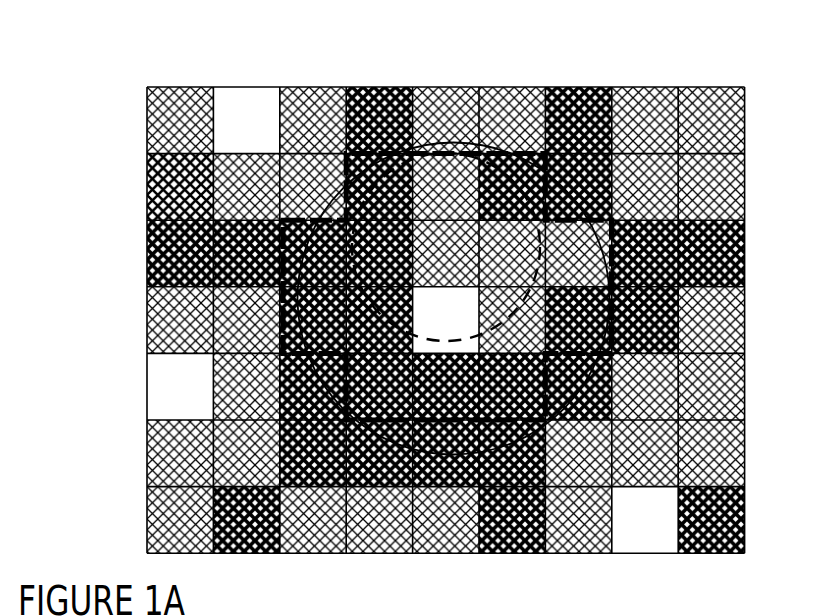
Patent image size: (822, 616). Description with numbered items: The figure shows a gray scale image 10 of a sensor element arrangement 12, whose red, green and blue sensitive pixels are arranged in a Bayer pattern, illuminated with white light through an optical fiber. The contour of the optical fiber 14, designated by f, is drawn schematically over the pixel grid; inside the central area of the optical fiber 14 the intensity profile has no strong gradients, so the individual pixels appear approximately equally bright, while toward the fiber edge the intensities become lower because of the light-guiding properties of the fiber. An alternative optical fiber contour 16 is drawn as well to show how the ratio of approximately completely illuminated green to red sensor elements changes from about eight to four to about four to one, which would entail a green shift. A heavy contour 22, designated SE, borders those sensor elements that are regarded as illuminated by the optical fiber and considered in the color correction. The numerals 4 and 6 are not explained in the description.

The gray scale image 10 is at (313, 79).
The optical fiber 14 is at (607, 321).
The alternative optical fiber contour 16 is at (546, 238).
The contour 22 is at (283, 323).
The reference numeral 4 is at (327, 609).
The reference numeral 6 is at (227, 609).
The sensor element arrangement 12 is at (428, 609).